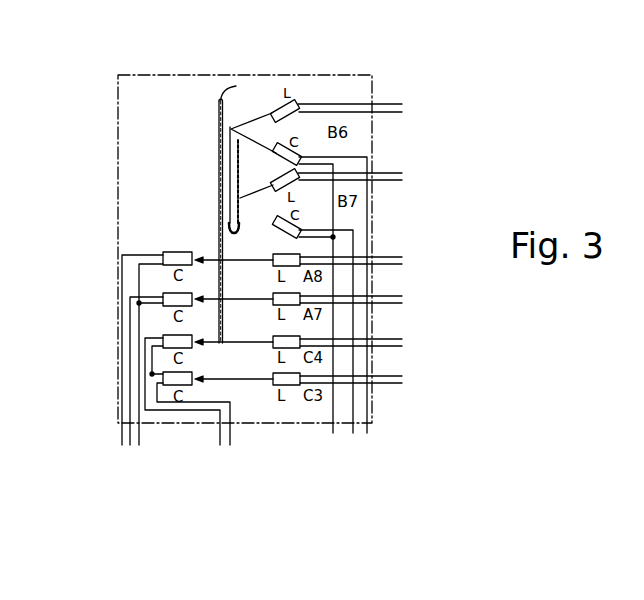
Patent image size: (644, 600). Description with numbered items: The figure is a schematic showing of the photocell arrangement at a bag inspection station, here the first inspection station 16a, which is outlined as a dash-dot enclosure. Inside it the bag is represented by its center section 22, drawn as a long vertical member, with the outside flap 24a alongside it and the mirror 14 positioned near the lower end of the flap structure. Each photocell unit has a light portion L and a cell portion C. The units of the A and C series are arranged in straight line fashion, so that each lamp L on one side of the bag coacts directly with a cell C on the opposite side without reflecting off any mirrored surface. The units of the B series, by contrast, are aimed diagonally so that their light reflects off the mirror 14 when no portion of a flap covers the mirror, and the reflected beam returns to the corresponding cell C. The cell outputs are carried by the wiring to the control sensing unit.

The mirror 14 is at (237, 231).
The first inspection station 16a is at (372, 87).
The center section 22 is at (210, 184).
The outside flap 24a is at (245, 89).